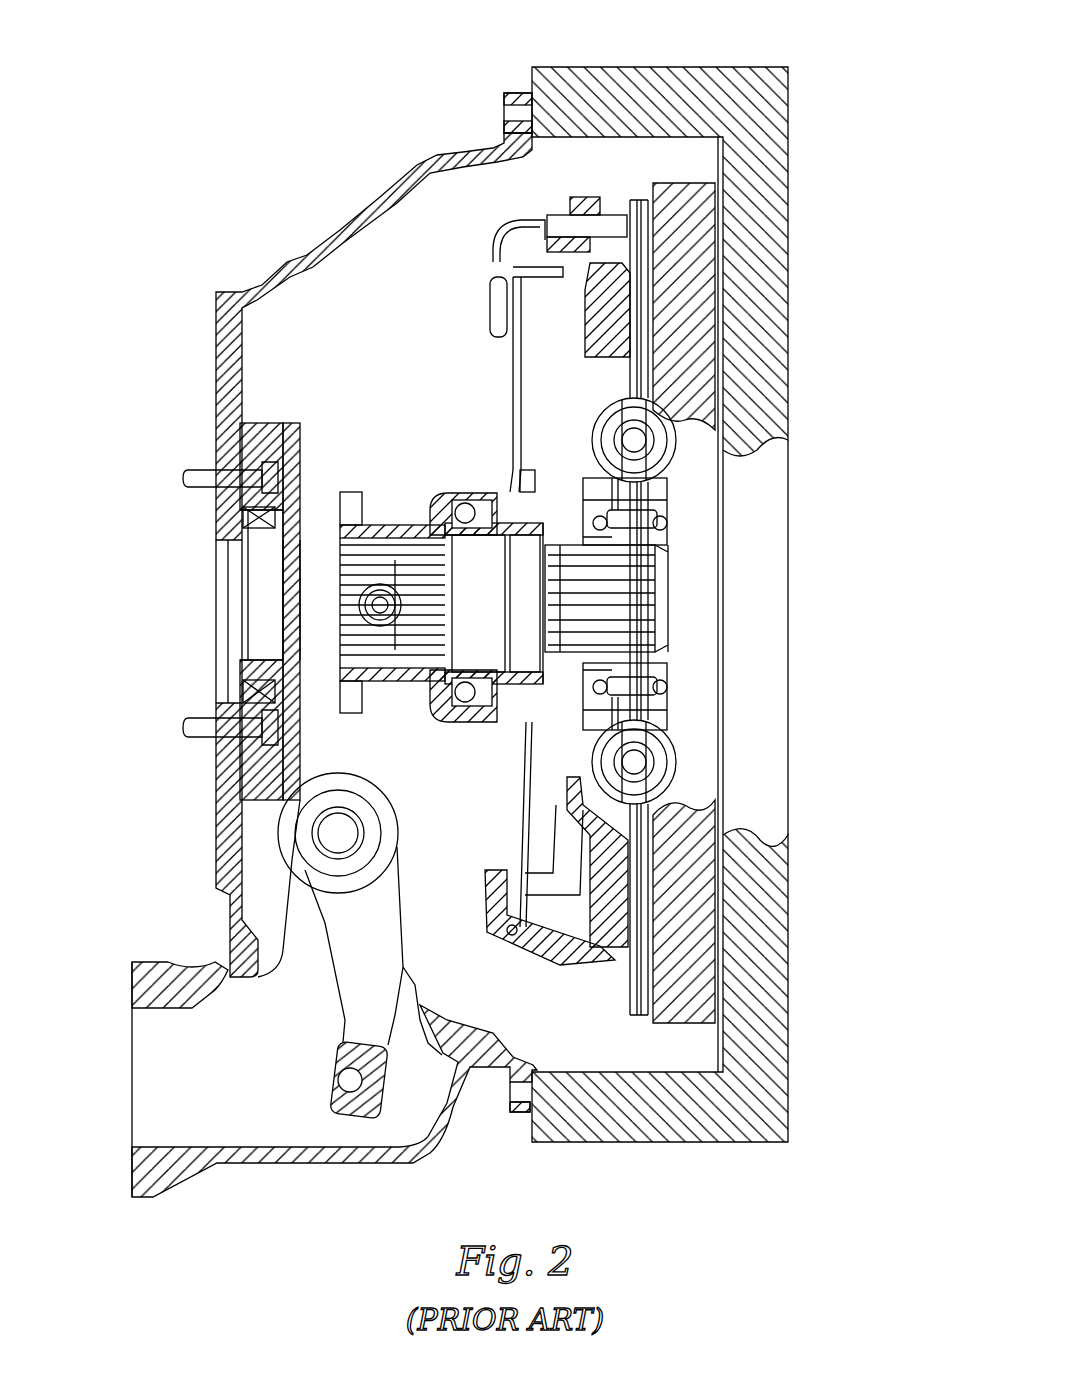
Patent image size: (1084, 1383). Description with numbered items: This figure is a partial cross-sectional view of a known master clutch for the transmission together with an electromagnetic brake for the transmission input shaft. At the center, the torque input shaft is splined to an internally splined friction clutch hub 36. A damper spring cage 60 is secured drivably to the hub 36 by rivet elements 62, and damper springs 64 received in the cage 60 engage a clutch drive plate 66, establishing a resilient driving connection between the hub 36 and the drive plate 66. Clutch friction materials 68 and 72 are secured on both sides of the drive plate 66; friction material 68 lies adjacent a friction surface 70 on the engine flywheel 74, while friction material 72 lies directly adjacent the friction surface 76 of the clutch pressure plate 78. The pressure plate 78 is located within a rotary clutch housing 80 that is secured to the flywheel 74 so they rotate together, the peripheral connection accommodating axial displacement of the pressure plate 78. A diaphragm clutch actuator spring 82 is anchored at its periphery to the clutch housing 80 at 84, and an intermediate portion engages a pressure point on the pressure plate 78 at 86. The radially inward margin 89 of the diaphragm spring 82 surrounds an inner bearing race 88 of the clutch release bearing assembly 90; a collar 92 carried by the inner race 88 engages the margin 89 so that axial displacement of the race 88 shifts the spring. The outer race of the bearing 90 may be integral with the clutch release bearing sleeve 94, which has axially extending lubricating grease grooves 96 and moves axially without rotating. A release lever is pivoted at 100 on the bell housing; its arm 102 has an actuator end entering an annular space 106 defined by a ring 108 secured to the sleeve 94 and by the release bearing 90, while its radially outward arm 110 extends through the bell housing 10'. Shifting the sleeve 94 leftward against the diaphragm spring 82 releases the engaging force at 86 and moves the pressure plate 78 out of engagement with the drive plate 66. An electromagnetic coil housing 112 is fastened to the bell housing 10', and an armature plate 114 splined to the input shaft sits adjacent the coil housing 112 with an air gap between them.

The bell housing 10' is at (374, 336).
The friction clutch hub 36 is at (637, 545).
The damper spring cage 60 is at (593, 440).
The rivet elements 62 is at (633, 522).
The damper springs 64 is at (653, 428).
The clutch drive plate 66 is at (650, 390).
The clutch friction material 68 is at (648, 263).
The friction surface 70 is at (648, 300).
The clutch friction material 72 is at (641, 240).
The engine flywheel 74 is at (658, 188).
The friction surface 76 is at (500, 260).
The clutch pressure plate 78 is at (607, 333).
The rotary clutch housing 80 is at (580, 213).
The diaphragm clutch actuator spring 82 is at (527, 777).
The anchor point 84 is at (507, 927).
The pressure point 86 is at (523, 875).
The inner bearing race 88 is at (482, 500).
The radially inward margin 89 is at (535, 481).
The clutch release bearing assembly 90 is at (462, 513).
The collar 92 is at (515, 493).
The clutch release bearing sleeve 94 is at (390, 520).
The lubricating grease grooves 96 is at (415, 648).
The pivot 100 is at (337, 833).
The arm of the release lever 102 is at (333, 727).
The annular space 106 is at (348, 602).
The ring 108 is at (330, 510).
The radially outward arm 110 is at (365, 1015).
The electromagnetic coil housing 112 is at (258, 438).
The armature plate 114 is at (290, 680).